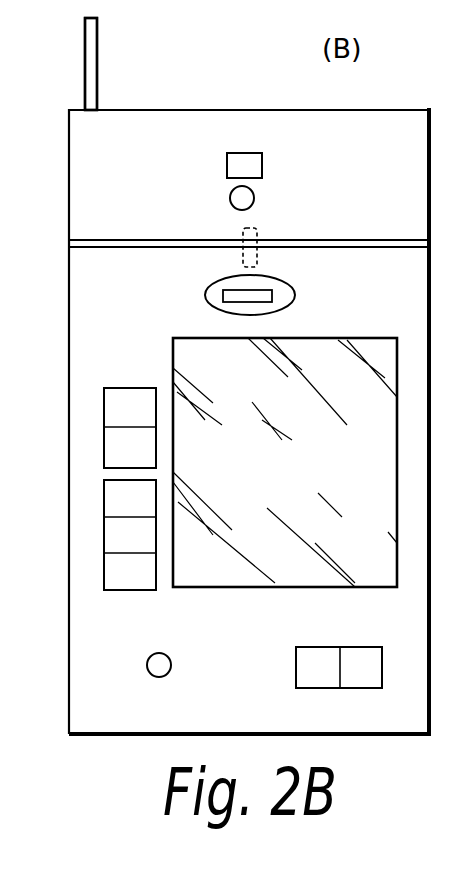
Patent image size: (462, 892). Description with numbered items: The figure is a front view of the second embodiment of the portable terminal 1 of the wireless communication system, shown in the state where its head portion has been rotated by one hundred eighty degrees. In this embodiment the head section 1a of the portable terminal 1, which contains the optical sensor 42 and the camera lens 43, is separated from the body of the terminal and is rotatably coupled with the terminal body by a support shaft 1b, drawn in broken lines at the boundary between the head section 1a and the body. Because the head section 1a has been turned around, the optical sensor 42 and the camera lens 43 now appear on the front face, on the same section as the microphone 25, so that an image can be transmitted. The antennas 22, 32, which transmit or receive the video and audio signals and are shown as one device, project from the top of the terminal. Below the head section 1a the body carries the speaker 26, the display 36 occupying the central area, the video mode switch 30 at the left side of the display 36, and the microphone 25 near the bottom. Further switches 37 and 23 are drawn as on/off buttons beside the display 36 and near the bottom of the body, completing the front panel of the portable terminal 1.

The portable terminal 1 is at (461, 368).
The head section 1a is at (461, 171).
The support shaft 1b is at (243, 231).
The antenna 22 is at (98, 62).
The antenna 32 is at (91, 64).
The optical sensor 42 is at (227, 167).
The camera lens 43 is at (254, 195).
The speaker 26 is at (218, 296).
The on/off switch 37 is at (128, 388).
The video mode switch 30 is at (104, 539).
The display 36 is at (273, 483).
The power on/off switch 23 is at (322, 647).
The microphone 25 is at (171, 662).